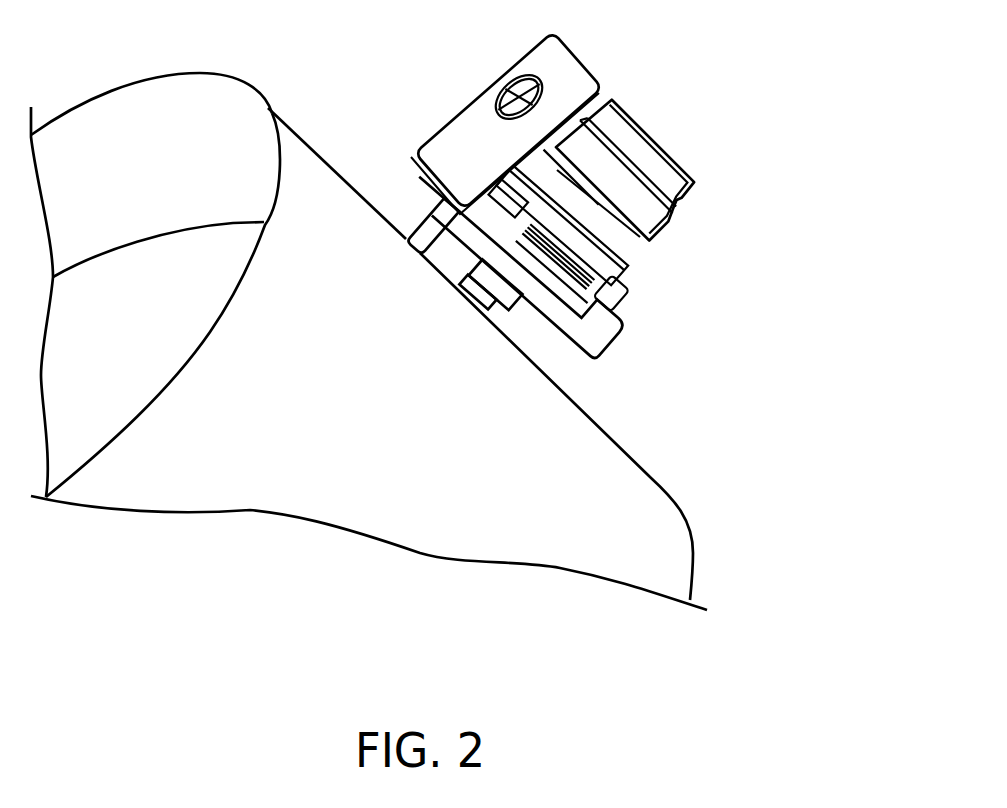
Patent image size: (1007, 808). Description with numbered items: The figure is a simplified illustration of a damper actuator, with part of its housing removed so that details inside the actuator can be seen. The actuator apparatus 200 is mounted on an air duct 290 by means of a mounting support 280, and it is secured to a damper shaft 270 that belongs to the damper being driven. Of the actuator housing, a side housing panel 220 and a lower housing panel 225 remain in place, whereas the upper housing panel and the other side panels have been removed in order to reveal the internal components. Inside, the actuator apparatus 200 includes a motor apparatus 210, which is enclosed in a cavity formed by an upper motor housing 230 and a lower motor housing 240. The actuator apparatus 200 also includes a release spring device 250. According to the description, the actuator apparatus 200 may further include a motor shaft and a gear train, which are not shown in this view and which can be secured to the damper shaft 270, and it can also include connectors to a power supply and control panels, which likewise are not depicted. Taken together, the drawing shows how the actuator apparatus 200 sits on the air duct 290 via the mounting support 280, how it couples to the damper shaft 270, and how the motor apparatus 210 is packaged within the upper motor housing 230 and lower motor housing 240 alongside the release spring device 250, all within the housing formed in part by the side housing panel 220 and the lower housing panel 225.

The actuator apparatus 200 is at (752, 68).
The motor apparatus 210 is at (647, 123).
The side housing panel 220 is at (473, 131).
The lower housing panel 225 is at (595, 340).
The upper motor housing 230 is at (661, 179).
The lower motor housing 240 is at (602, 245).
The release spring device 250 is at (615, 293).
The damper shaft 270 is at (490, 317).
The mounting support 280 is at (421, 222).
The air duct 290 is at (314, 185).